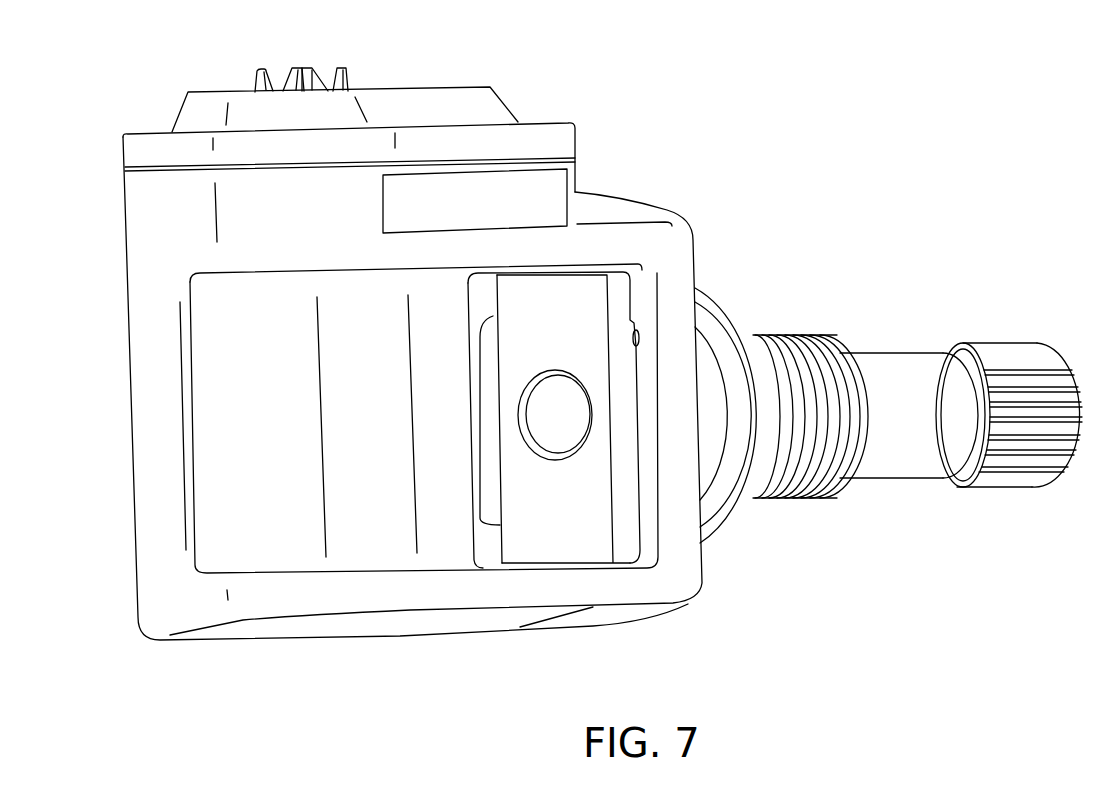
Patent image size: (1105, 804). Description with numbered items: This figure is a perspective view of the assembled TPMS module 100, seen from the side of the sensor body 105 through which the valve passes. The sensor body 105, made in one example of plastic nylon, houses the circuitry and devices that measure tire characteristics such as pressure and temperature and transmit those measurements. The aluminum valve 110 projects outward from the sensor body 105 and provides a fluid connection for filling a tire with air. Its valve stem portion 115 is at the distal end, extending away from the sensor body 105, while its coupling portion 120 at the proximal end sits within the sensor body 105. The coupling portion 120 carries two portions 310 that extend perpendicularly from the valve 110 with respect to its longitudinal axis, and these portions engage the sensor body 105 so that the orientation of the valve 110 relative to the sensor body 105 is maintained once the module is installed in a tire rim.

The TPMS module 100 is at (602, 354).
The sensor body 105 is at (412, 354).
The valve 110 is at (885, 352).
The valve stem portion 115 is at (730, 515).
The coupling portion 120 is at (553, 300).
The portion 310 is at (620, 297).